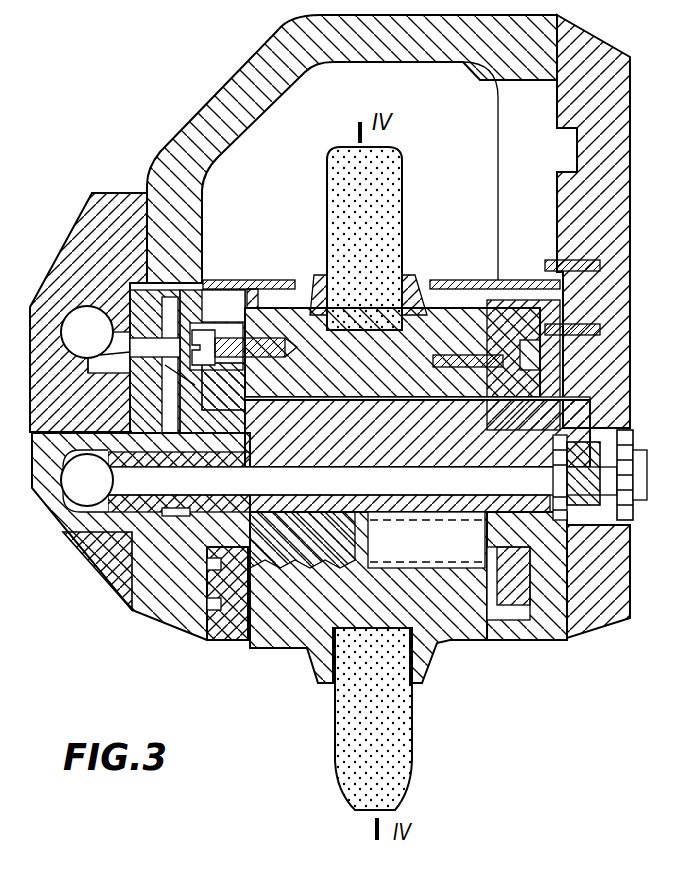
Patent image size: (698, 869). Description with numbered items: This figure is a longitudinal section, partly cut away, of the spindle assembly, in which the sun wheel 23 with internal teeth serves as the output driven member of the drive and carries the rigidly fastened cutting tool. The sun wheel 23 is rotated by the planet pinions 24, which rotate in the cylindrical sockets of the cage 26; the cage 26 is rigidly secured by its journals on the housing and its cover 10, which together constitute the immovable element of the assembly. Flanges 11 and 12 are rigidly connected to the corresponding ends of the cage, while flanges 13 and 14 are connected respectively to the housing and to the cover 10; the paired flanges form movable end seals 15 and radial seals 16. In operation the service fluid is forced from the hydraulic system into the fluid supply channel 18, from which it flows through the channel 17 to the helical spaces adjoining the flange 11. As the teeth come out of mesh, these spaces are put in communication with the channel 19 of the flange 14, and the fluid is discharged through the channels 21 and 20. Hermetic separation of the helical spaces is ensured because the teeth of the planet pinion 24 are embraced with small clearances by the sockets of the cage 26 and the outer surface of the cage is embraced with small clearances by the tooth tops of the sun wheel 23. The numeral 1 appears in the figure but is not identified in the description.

The grinding wheel 1 is at (340, 744).
The cover 10 is at (622, 216).
The flange 11 is at (238, 642).
The flange 12 is at (560, 392).
The flange 13 is at (42, 451).
The flange 14 is at (498, 526).
The movable end seals 15 is at (120, 298).
The radial seals 16 is at (500, 430).
The channel 17 is at (157, 418).
The fluid supply channel 18 is at (72, 317).
The channel 19 is at (535, 452).
The channel 20 is at (78, 492).
The channel 21 is at (437, 484).
The sun wheel 23 is at (298, 642).
The planet pinions 24 is at (350, 552).
The cage 26 is at (176, 506).